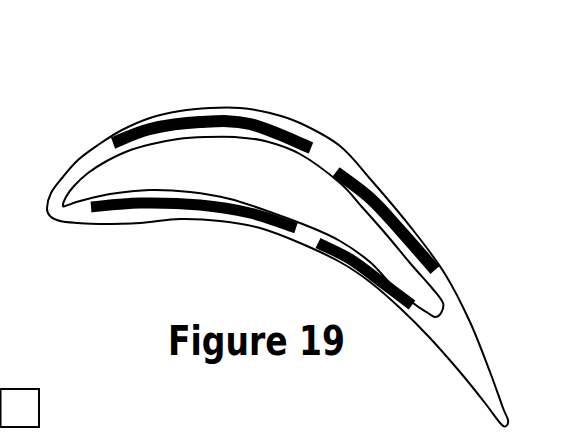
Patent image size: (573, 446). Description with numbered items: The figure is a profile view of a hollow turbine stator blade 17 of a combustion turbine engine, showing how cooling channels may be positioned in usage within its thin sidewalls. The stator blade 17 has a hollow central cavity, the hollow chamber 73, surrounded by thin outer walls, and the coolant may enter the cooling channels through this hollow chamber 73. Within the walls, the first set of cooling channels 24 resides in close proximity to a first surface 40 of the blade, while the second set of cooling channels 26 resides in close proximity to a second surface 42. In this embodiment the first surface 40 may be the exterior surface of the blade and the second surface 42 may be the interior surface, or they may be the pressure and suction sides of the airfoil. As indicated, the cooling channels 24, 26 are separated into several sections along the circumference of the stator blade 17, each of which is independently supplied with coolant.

The stator blade 17 is at (277, 223).
The first set of cooling channels 24 is at (272, 128).
The second set of cooling channels 26 is at (256, 133).
The first surface 40 is at (297, 125).
The second surface 42 is at (273, 134).
The hollow chamber 73 is at (166, 184).